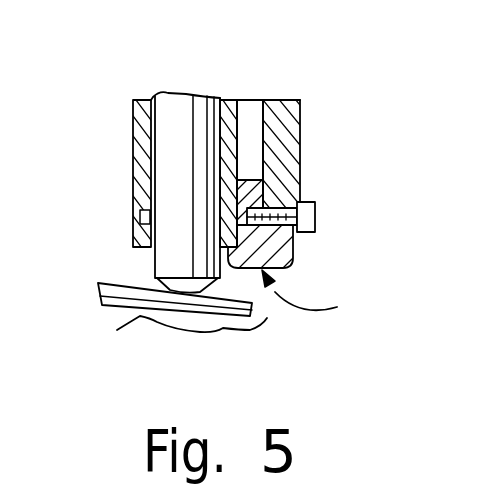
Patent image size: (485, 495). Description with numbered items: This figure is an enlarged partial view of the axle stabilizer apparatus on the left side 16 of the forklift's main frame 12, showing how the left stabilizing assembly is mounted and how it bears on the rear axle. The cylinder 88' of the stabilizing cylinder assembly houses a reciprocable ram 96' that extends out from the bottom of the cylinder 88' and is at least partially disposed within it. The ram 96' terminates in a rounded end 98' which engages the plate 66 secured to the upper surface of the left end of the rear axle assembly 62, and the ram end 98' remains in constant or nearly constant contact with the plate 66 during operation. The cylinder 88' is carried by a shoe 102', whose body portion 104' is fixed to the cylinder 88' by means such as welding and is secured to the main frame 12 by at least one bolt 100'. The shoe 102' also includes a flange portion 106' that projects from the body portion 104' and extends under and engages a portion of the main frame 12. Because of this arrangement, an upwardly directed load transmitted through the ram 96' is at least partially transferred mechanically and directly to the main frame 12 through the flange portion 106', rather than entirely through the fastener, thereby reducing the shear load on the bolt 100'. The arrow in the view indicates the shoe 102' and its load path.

The main frame 12 is at (280, 103).
The left side 16 is at (288, 128).
The cylinder 88' is at (109, 168).
The reciprocable ram 96' is at (101, 230).
The rounded end 98' is at (101, 268).
The bolt 100' is at (312, 201).
The shoe 102' is at (321, 296).
The body portion 104' is at (240, 155).
The flange portion 106' is at (308, 257).
The rear axle assembly 62 is at (117, 330).
The plate 66 is at (267, 318).